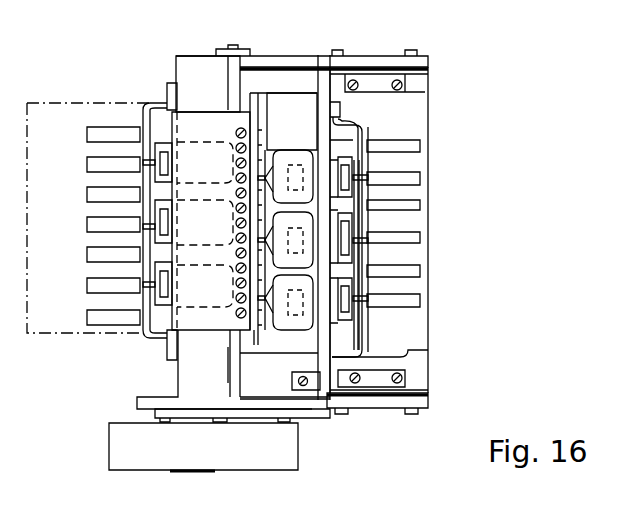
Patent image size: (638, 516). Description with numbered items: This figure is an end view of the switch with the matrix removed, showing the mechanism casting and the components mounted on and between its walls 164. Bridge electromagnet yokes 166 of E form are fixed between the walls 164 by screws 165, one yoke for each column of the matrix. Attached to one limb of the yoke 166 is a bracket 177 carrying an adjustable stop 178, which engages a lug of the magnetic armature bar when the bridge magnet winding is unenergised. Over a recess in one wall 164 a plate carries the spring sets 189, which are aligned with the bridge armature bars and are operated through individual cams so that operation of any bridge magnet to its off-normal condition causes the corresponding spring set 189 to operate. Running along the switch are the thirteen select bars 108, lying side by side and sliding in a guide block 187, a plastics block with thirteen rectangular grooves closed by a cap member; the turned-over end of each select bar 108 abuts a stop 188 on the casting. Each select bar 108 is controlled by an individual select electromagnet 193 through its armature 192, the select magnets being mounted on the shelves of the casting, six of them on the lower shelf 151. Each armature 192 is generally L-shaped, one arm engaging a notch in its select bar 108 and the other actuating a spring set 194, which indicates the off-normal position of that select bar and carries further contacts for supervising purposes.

The select bar 108 is at (236, 148).
The lower shelf 151 is at (325, 60).
The wall of the casting 164 is at (425, 62).
The screws 165 is at (408, 50).
The bridge electromagnet yoke 166 is at (415, 110).
The bracket 177 is at (375, 378).
The adjustable stop 178 is at (305, 386).
The guide block 187 is at (267, 345).
The stop 188 is at (236, 242).
The spring set 189 is at (118, 452).
The armature 192 is at (163, 140).
The select electromagnet 193 is at (299, 150).
The spring set 194 is at (98, 257).